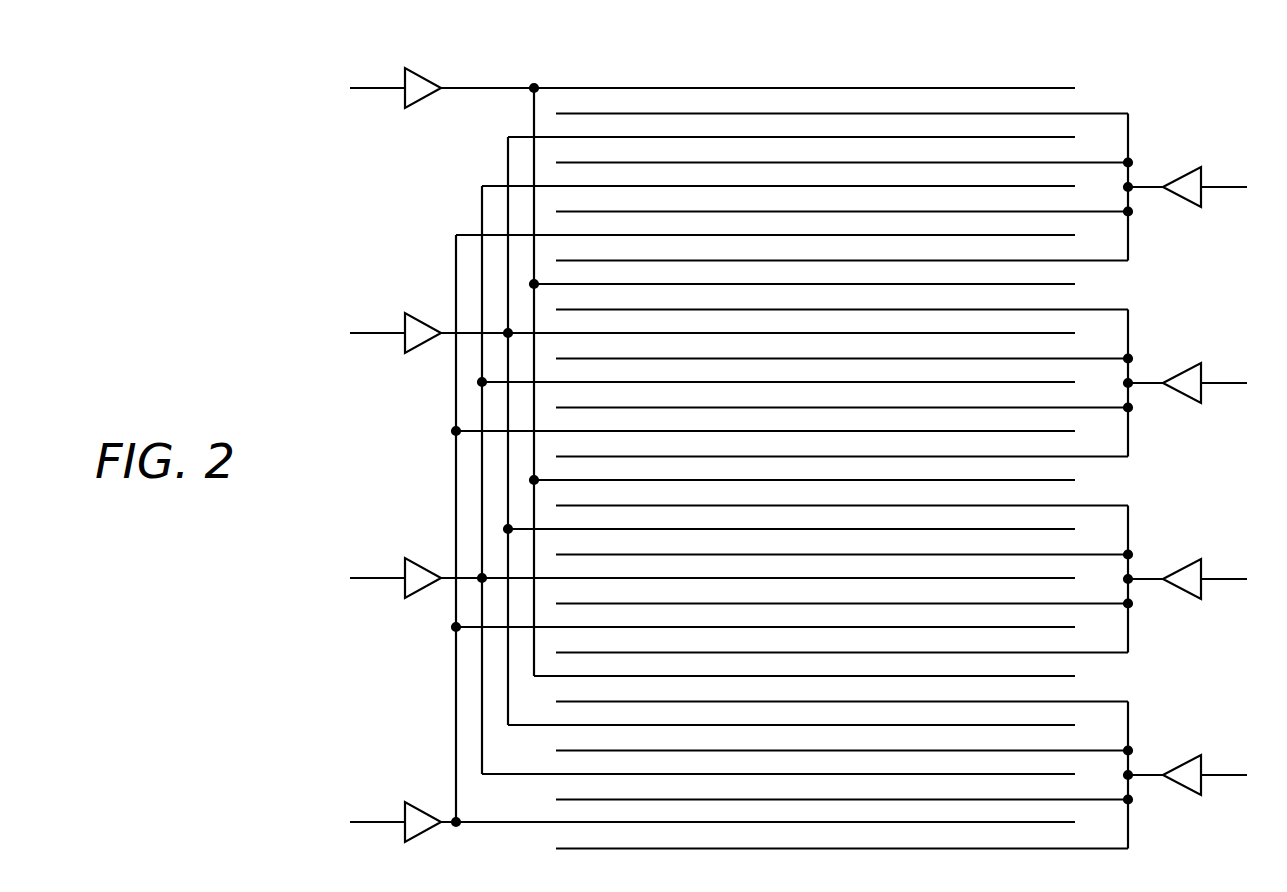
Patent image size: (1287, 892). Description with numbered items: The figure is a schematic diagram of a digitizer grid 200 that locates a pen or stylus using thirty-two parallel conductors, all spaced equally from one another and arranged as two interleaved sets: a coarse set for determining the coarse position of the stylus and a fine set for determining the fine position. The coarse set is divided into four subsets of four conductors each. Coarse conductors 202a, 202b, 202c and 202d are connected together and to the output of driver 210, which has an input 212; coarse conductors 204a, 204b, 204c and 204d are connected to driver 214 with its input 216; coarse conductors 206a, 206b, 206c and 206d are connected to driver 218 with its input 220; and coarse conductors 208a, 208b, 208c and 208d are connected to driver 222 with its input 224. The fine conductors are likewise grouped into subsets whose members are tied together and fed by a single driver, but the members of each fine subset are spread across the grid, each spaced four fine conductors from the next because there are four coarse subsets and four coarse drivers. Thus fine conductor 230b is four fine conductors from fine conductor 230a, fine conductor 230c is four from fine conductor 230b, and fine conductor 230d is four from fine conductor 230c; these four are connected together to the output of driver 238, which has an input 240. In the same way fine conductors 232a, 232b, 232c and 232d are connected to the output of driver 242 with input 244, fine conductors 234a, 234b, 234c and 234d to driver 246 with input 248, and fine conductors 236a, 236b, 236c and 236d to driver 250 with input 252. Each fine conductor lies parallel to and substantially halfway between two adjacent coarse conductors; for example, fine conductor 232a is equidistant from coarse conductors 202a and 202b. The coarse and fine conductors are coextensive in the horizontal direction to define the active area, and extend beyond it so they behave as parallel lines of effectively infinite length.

The grid 200 is at (803, 37).
The coarse conductor 202a is at (1040, 113).
The coarse conductor 202b is at (1040, 162).
The coarse conductor 202c is at (1040, 211).
The coarse conductor 202d is at (1040, 260).
The coarse conductor 204a is at (1033, 309).
The coarse conductor 204b is at (1033, 358).
The coarse conductor 204c is at (1033, 407).
The coarse conductor 204d is at (1033, 456).
The coarse conductor 206a is at (1025, 505).
The coarse conductor 206b is at (1025, 554).
The coarse conductor 206c is at (1025, 603).
The coarse conductor 206d is at (1025, 652).
The coarse conductor 208a is at (1020, 701).
The coarse conductor 208b is at (1020, 750).
The coarse conductor 208c is at (1020, 799).
The coarse conductor 208d is at (1020, 848).
The driver 210 is at (1187, 171).
The input 212 is at (1228, 189).
The driver 214 is at (1187, 367).
The input 216 is at (1228, 385).
The driver 218 is at (1187, 563).
The input 220 is at (1228, 581).
The driver 222 is at (1187, 759).
The input 224 is at (1228, 777).
The fine conductor 230a is at (556, 87).
The fine conductor 230b is at (556, 283).
The fine conductor 230c is at (556, 479).
The fine conductor 230d is at (556, 675).
The fine conductor 232a is at (556, 136).
The fine conductor 232b is at (556, 332).
The fine conductor 232c is at (556, 528).
The fine conductor 232d is at (556, 724).
The fine conductor 234a is at (556, 185).
The fine conductor 234b is at (556, 381).
The fine conductor 234c is at (556, 577).
The fine conductor 234d is at (556, 773).
The fine conductor 236a is at (556, 234).
The fine conductor 236b is at (556, 430).
The fine conductor 236c is at (556, 626).
The fine conductor 236d is at (556, 821).
The driver 238 is at (421, 68).
The input 240 is at (373, 90).
The driver 242 is at (413, 313).
The input 244 is at (373, 335).
The driver 246 is at (415, 558).
The input 248 is at (373, 580).
The driver 250 is at (428, 785).
The input 252 is at (378, 824).